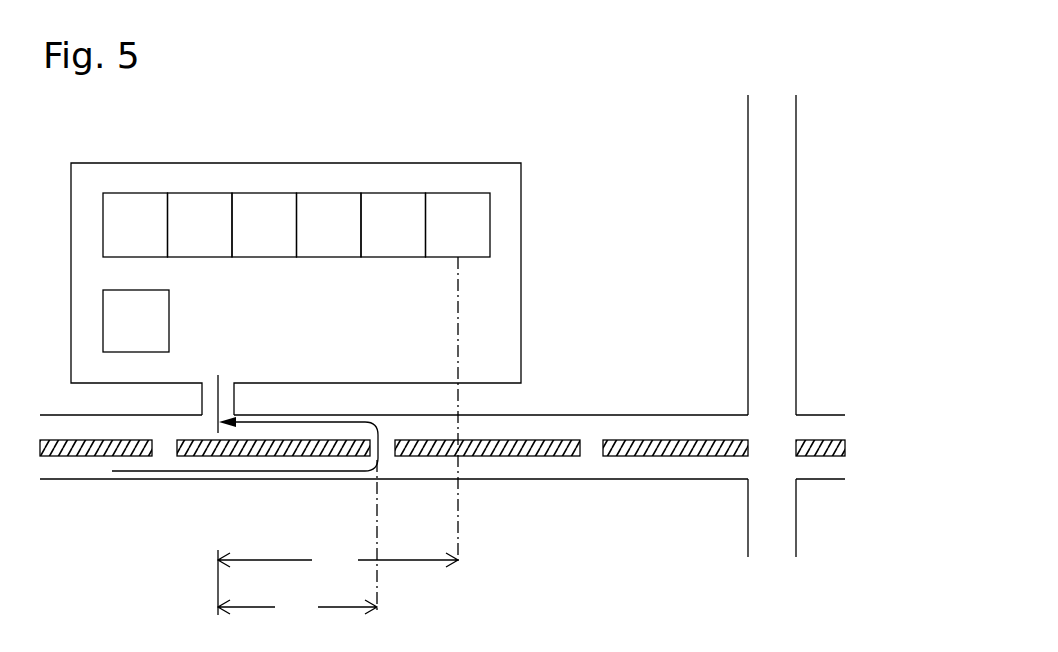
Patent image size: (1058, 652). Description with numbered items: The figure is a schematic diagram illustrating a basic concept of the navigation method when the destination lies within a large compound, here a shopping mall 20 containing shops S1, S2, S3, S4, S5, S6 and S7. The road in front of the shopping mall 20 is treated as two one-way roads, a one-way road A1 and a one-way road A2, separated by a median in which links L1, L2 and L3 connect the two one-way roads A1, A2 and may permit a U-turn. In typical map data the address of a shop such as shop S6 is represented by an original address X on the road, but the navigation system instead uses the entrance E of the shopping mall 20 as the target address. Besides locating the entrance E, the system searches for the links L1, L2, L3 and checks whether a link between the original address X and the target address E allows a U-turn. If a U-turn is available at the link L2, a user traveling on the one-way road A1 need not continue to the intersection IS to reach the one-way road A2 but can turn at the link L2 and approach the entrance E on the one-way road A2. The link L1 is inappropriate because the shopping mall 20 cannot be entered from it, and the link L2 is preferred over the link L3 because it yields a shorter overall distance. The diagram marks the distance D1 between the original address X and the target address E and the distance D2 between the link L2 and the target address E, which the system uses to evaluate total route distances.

The shopping mall 20 is at (282, 170).
The shop S1 is at (135, 225).
The shop S2 is at (200, 225).
The shop S3 is at (264, 225).
The shop S4 is at (329, 225).
The shop S5 is at (393, 225).
The shop S6 is at (458, 225).
The shop S7 is at (136, 321).
The entrance E is at (245, 411).
The original address X is at (468, 411).
The one-way road A1 is at (487, 470).
The one-way road A2 is at (533, 422).
The link L1 is at (168, 457).
The link L2 is at (387, 455).
The link L3 is at (595, 455).
The intersection IS is at (772, 422).
The distance D1 is at (338, 582).
The distance D2 is at (297, 539).